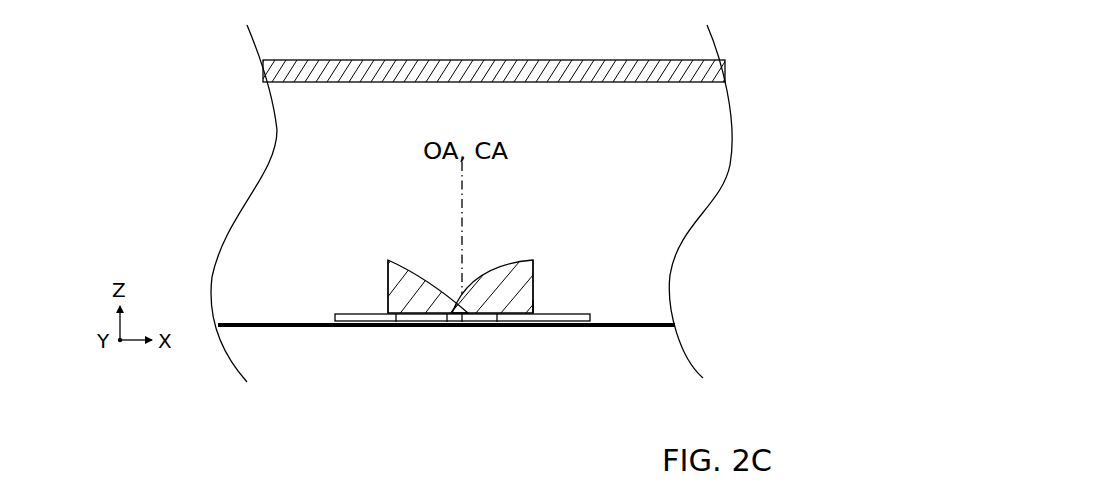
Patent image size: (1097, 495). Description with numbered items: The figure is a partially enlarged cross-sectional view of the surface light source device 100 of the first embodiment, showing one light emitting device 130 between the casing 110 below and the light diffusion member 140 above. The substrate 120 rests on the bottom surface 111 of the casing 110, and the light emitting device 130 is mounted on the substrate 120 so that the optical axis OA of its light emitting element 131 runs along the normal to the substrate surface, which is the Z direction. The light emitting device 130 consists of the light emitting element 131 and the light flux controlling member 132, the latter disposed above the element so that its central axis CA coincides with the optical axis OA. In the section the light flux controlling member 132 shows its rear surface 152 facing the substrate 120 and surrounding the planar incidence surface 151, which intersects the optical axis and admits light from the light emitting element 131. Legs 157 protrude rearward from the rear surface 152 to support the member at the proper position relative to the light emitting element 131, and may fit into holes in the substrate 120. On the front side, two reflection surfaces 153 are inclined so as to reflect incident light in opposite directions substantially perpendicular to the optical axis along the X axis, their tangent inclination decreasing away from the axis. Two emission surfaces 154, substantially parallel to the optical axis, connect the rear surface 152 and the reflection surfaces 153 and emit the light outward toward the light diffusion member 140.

The surface light source device 100 is at (750, 71).
The light diffusion member 140 is at (267, 72).
The light emitting device 130 is at (610, 181).
The casing 110 is at (446, 359).
The bottom surface 111 is at (287, 328).
The substrate 120 is at (337, 314).
The rear surface 152 is at (397, 323).
The incidence surface 151 is at (447, 323).
The light emitting element 131 is at (462, 323).
The leg 157 is at (498, 322).
The reflection surface 153 is at (412, 268).
The emission surface 154 is at (388, 270).
The light flux controlling member 132 is at (535, 301).